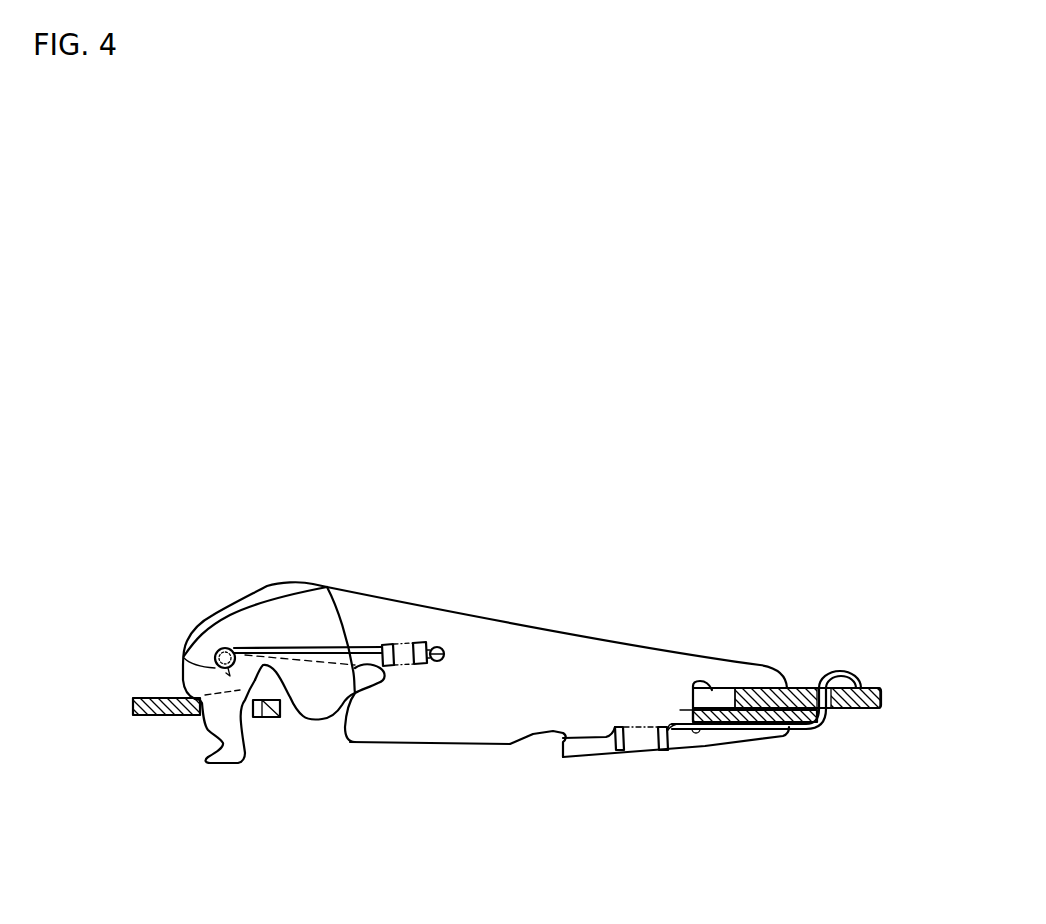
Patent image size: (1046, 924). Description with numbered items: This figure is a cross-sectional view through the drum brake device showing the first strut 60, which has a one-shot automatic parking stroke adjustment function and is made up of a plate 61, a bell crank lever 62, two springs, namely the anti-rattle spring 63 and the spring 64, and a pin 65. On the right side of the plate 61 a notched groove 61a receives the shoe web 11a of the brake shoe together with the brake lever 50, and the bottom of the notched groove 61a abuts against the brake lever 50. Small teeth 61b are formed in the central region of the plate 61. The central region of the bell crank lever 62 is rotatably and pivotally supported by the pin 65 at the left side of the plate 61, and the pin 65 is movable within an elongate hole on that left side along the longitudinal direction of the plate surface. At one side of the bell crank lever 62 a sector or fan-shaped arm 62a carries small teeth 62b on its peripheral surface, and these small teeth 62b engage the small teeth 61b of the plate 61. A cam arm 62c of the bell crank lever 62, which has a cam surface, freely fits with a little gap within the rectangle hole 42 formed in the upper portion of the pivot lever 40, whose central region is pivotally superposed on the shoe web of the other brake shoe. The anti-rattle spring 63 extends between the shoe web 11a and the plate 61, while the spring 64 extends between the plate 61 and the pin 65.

The shoe web 11a is at (857, 712).
The pivot lever 40 is at (152, 720).
The rectangle hole 42 is at (246, 763).
The brake lever 50 is at (767, 717).
The first strut 60 is at (522, 758).
The plate 61 is at (443, 733).
The notched groove 61a is at (712, 688).
The small teeth 61b is at (332, 720).
The bell crank lever 62 is at (213, 621).
The fan-shaped arm 62a is at (303, 720).
The small teeth 62b is at (362, 697).
The cam arm 62c is at (205, 733).
The anti-rattle spring 63 is at (678, 748).
The spring 64 is at (428, 642).
The pin 65 is at (216, 658).